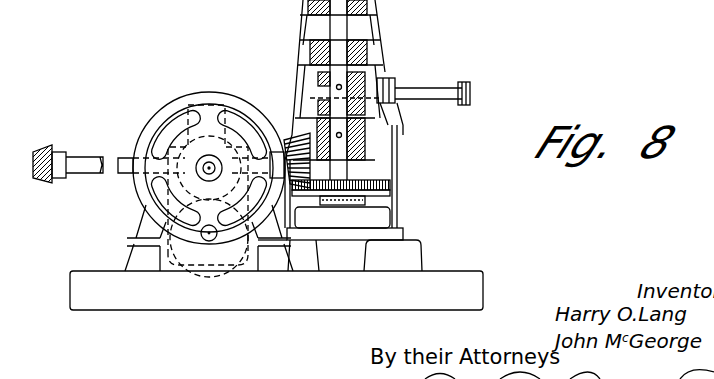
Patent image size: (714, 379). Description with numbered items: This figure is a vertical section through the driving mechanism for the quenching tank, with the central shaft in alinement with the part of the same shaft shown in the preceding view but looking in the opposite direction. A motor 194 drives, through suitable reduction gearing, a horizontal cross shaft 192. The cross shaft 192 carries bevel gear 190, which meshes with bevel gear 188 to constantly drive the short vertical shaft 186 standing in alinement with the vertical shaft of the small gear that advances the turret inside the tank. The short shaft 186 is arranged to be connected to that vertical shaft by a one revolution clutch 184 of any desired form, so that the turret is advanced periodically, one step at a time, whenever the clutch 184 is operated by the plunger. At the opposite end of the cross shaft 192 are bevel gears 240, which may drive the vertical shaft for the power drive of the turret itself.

The one revolution clutch 184 is at (422, 95).
The short shaft 186 is at (367, 155).
The bevel gear 188 is at (393, 184).
The bevel gear 190 is at (290, 138).
The cross shaft 192 is at (125, 160).
The motor 194 is at (167, 245).
The bevel gears 240 is at (43, 152).